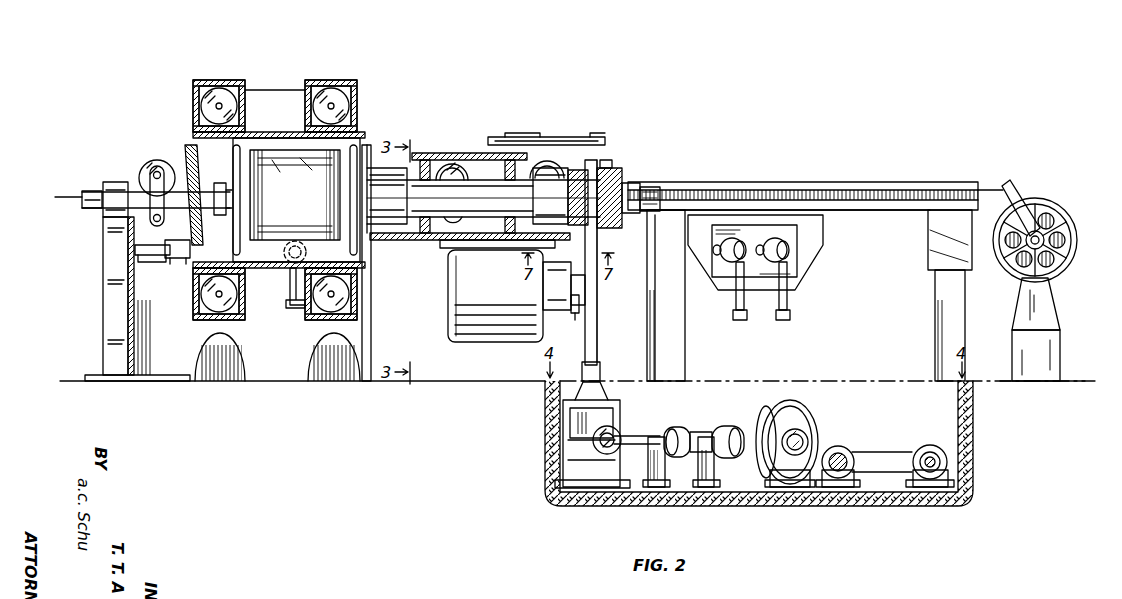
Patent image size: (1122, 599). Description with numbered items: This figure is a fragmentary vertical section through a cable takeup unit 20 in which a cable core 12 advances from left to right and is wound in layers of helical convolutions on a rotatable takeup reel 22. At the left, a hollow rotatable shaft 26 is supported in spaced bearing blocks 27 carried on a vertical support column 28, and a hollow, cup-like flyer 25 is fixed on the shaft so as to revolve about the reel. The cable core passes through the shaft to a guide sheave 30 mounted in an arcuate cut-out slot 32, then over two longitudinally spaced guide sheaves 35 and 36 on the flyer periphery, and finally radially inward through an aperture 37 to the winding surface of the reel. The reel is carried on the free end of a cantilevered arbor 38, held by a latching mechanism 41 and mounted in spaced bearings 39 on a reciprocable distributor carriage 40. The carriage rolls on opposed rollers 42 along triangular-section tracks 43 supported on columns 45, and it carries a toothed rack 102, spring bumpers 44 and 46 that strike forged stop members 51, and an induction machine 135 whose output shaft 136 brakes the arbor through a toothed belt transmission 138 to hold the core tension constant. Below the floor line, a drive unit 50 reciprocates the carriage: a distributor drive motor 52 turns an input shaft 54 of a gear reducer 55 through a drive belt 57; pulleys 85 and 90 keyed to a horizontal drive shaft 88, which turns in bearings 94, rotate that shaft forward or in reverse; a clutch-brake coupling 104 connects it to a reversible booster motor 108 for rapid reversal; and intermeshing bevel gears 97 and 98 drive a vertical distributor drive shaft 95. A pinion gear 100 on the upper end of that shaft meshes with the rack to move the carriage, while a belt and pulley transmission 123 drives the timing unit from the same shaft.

The cable core 12 is at (73, 193).
The takeup unit 20 is at (381, 85).
The takeup reel 22 is at (281, 240).
The flyer 25 is at (275, 270).
The hollow rotatable shaft 26 is at (88, 190).
The bearing blocks 27 is at (120, 186).
The vertical support column 28 is at (103, 297).
The guide sheave 30 is at (174, 164).
The arcuate cut-out slot 32 is at (150, 186).
The guide sheave 35 is at (199, 106).
The guide sheave 36 is at (350, 104).
The aperture 37 is at (349, 140).
The arbor 38 is at (483, 178).
The bearings 39 is at (565, 165).
The distributor carriage 40 is at (465, 125).
The latching mechanism 41 is at (218, 220).
The rollers 42 is at (473, 164).
The tracks 43 is at (857, 208).
The spring bumper 44 is at (178, 262).
The support columns 45 is at (371, 330).
The spring bumper 46 is at (590, 268).
The drive unit 50 is at (799, 384).
The stop member 51 is at (716, 252).
The distributor drive motor 52 is at (932, 445).
The input shaft 54 is at (843, 460).
The gear reducer 55 is at (833, 448).
The drive belt 57 is at (890, 445).
The pulley 85 is at (740, 427).
The drive shaft 88 is at (703, 432).
The pulley 90 is at (672, 428).
The bearings 94 is at (652, 458).
The distributor drive shaft 95 is at (598, 330).
The bevel gear 97 is at (620, 432).
The bevel gear 98 is at (600, 414).
The pinion gear 100 is at (606, 162).
The toothed rack 102 is at (372, 152).
The clutch-brake coupling 104 is at (768, 410).
The booster motor 108 is at (806, 418).
The belt and pulley transmission 123 is at (533, 136).
The induction machine 135 is at (439, 290).
The output shaft 136 is at (567, 317).
The belt transmission 138 is at (598, 232).